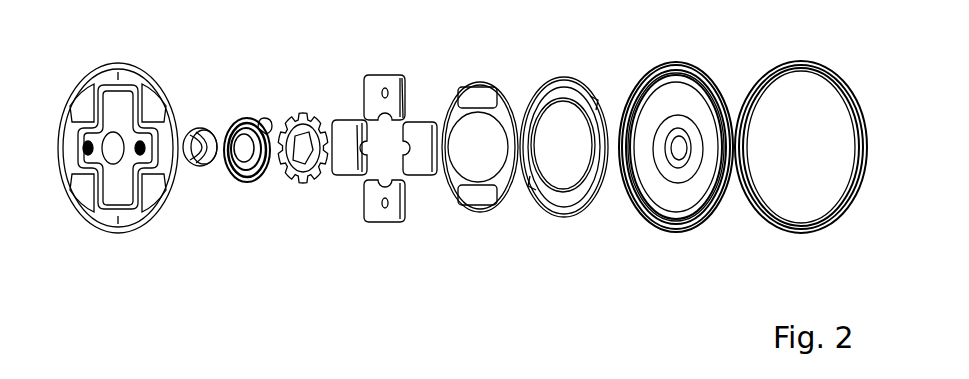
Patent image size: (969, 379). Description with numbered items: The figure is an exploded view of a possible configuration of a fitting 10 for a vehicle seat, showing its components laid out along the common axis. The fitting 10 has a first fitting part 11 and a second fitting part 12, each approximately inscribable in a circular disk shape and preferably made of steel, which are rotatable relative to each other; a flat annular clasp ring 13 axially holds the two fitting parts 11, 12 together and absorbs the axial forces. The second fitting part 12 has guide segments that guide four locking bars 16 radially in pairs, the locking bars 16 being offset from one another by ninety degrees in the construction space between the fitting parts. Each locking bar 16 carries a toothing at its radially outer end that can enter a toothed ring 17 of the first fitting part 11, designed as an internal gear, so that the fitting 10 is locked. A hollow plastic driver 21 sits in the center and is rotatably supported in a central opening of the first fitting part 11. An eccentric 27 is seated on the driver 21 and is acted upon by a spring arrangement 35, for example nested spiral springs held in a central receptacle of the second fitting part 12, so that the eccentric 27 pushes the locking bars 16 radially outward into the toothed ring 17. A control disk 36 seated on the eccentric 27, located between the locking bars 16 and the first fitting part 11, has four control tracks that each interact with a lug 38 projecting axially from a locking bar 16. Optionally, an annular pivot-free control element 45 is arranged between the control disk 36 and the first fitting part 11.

The fitting 10 is at (513, 222).
The first fitting part 11 is at (703, 215).
The second fitting part 12 is at (103, 230).
The clasp ring 13 is at (801, 62).
The locking bar 16 is at (387, 76).
The toothed ring 17 is at (629, 193).
The driver 21 is at (200, 128).
The eccentric 27 is at (303, 112).
The spring arrangement 35 is at (252, 181).
The control disk 36 is at (498, 92).
The lug 38 is at (403, 78).
The pivot-free control element 45 is at (582, 88).